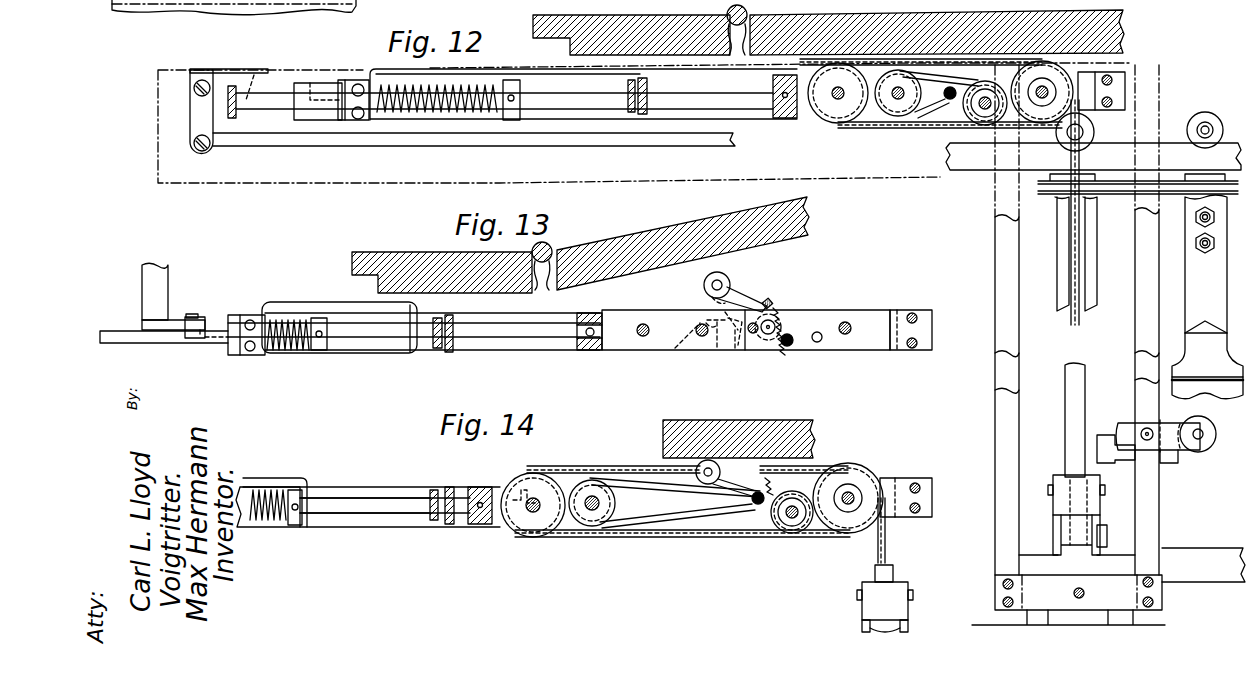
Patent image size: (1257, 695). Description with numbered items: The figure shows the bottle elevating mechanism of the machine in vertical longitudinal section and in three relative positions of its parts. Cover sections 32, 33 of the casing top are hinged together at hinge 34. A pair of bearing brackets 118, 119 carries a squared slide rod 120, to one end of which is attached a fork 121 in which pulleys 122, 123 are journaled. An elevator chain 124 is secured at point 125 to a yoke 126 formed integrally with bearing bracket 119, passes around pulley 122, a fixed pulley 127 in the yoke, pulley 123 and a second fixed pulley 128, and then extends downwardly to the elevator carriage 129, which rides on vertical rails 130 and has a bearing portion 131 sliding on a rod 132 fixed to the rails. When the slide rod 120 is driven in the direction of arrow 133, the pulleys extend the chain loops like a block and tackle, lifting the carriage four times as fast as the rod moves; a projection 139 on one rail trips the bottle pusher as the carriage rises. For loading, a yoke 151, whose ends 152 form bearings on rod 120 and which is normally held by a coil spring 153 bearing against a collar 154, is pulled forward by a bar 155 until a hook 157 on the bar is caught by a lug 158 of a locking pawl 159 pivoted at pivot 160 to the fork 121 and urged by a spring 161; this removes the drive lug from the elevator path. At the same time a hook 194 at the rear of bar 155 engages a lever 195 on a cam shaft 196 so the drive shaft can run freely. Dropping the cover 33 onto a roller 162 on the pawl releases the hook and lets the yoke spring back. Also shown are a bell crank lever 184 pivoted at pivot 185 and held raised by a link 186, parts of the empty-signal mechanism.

In FIG. 12, the cover section 32 is at (603, 15).
In FIG. 13, the cover section 32 is at (398, 253).
In FIG. 12, the cover section 33 is at (842, 15).
In FIG. 13, the cover section 33 is at (667, 226).
In FIG. 14, the cover section 33 is at (814, 438).
In FIG. 12, the hinge 34 is at (745, 10).
In FIG. 13, the hinge 34 is at (550, 249).
In FIG. 12, the bearing bracket 118 is at (232, 118).
In FIG. 12, the bearing bracket 119 is at (643, 114).
In FIG. 13, the bearing bracket 119 is at (450, 352).
In FIG. 14, the bearing bracket 119 is at (448, 528).
In FIG. 12, the squared slide rod 120 is at (764, 100).
In FIG. 13, the squared slide rod 120 is at (128, 344).
In FIG. 14, the squared slide rod 120 is at (407, 514).
In FIG. 12, the fork 121 is at (798, 118).
In FIG. 13, the fork 121 is at (618, 350).
In FIG. 14, the fork 121 is at (495, 527).
In FIG. 12, the pulley 122 is at (895, 116).
In FIG. 14, the pulley 122 is at (593, 530).
In FIG. 12, the pulley 123 is at (838, 123).
In FIG. 14, the pulley 123 is at (537, 536).
In FIG. 12, the elevator chain 124 is at (1069, 258).
In FIG. 14, the elevator chain 124 is at (697, 536).
In FIG. 12, the securing point 125 is at (948, 100).
In FIG. 14, the securing point 125 is at (758, 506).
In FIG. 12, the yoke 126 is at (983, 108).
In FIG. 14, the yoke 126 is at (660, 512).
In FIG. 12, the pulley 127 is at (990, 112).
In FIG. 14, the pulley 127 is at (792, 534).
In FIG. 12, the pulley 128 is at (1060, 95).
In FIG. 14, the pulley 128 is at (860, 524).
In FIG. 12, the elevator carriage 129 is at (1110, 538).
In FIG. 12, the vertical rails 130 is at (995, 428).
In FIG. 12, the bearing portion 131 is at (1080, 498).
In FIG. 14, the bearing portion 131 is at (874, 604).
In FIG. 12, the rod 132 is at (1080, 364).
In FIG. 14, the rod 132 is at (891, 571).
In FIG. 12, the arrow 133 is at (656, 101).
In FIG. 12, the projection 139 is at (1120, 418).
In FIG. 12, the yoke 151 is at (376, 68).
In FIG. 13, the yoke 151 is at (308, 302).
In FIG. 14, the yoke 151 is at (299, 477).
In FIG. 12, the yoke end 152 is at (372, 120).
In FIG. 13, the yoke end 152 is at (262, 352).
In FIG. 12, the coil spring 153 is at (460, 116).
In FIG. 13, the coil spring 153 is at (299, 350).
In FIG. 14, the coil spring 153 is at (258, 522).
In FIG. 12, the collar 154 is at (514, 119).
In FIG. 13, the collar 154 is at (318, 350).
In FIG. 14, the collar 154 is at (295, 507).
In FIG. 12, the bar 155 is at (630, 112).
In FIG. 13, the bar 155 is at (521, 350).
In FIG. 14, the bar 155 is at (356, 528).
In FIG. 13, the hook 157 is at (732, 350).
In FIG. 13, the lug 158 is at (712, 350).
In FIG. 13, the locking pawl 159 is at (740, 293).
In FIG. 14, the locking pawl 159 is at (743, 487).
In FIG. 13, the pivot 160 is at (770, 334).
In FIG. 13, the spring 161 is at (782, 306).
In FIG. 13, the roller 162 is at (704, 286).
In FIG. 14, the roller 162 is at (720, 472).
In FIG. 12, the bell crank lever 184 is at (190, 76).
In FIG. 12, the pivot 185 is at (196, 89).
In FIG. 12, the link 186 is at (230, 148).
In FIG. 12, the hook 194 is at (304, 78).
In FIG. 13, the hook 194 is at (195, 316).
In FIG. 13, the lever 195 is at (179, 315).
In FIG. 13, the cam shaft 196 is at (142, 278).